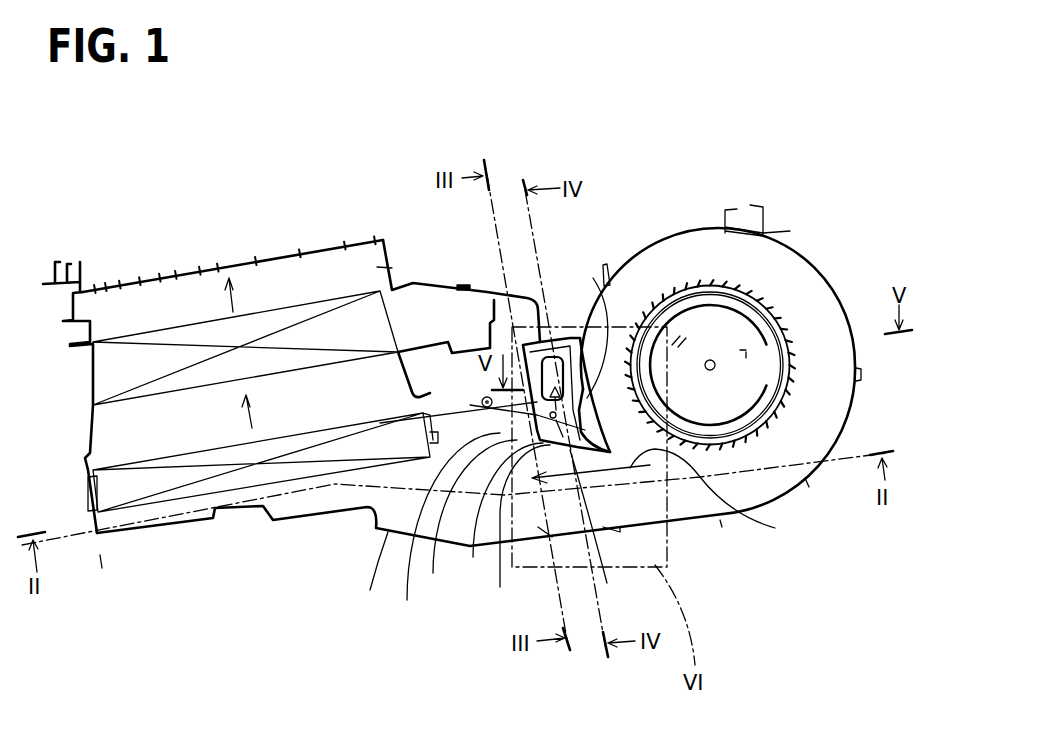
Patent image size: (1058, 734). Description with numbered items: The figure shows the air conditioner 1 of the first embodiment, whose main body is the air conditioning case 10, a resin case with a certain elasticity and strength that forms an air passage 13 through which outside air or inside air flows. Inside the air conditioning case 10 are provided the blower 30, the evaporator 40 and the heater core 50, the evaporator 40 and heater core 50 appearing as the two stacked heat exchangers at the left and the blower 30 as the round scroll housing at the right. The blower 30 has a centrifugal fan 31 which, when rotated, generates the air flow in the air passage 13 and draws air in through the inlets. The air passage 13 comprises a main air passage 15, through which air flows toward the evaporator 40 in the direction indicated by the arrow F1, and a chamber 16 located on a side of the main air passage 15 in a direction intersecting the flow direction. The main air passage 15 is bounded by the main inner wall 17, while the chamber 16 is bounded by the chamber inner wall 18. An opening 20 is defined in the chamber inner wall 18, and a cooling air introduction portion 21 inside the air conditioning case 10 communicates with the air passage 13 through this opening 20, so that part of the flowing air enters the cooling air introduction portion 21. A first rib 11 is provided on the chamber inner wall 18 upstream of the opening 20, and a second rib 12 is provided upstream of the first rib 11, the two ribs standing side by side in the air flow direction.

The air conditioner 1 is at (141, 137).
The air conditioning case 10 is at (322, 515).
The first rib 11 is at (501, 516).
The second rib 12 is at (518, 530).
The air passage 13 is at (628, 412).
The main air passage 15 is at (632, 505).
The chamber 16 is at (485, 428).
The main inner wall 17 is at (493, 534).
The chamber inner wall 18 is at (442, 537).
The opening 20 is at (467, 519).
The cooling air introduction portion 21 is at (608, 345).
The blower 30 is at (770, 346).
The fan 31 is at (757, 293).
The evaporator 40 is at (110, 487).
The heater core 50 is at (100, 379).
The arrow representing the flow direction of air F1 is at (668, 504).